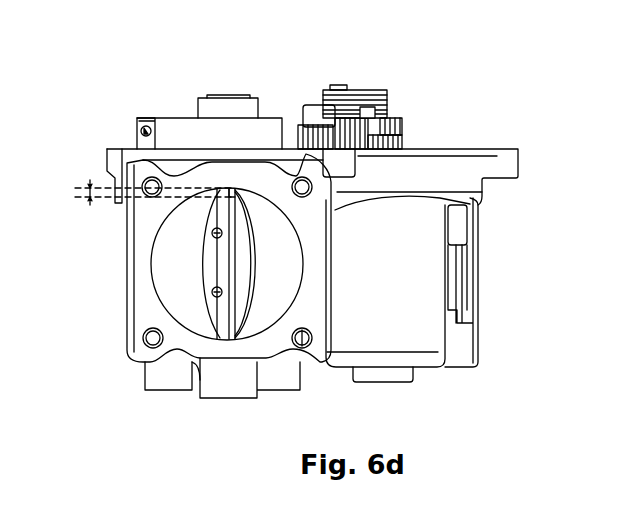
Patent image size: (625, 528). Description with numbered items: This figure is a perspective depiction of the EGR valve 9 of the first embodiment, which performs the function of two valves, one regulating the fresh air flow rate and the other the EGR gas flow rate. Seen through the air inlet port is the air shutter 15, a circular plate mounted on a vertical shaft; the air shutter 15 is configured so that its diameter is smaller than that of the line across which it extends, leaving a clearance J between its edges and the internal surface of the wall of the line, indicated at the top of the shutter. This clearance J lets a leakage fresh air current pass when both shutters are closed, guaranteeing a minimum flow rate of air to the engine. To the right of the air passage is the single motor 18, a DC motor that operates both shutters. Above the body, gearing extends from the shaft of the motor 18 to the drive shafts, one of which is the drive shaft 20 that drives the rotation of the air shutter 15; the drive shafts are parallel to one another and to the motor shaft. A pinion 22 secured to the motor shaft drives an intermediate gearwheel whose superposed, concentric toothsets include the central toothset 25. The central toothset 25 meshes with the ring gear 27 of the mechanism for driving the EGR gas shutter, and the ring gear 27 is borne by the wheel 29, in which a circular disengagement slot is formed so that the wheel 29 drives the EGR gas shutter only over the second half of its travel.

The EGR valve 9 is at (353, 93).
The air shutter 15 is at (207, 258).
The motor 18 is at (421, 286).
The drive shaft 20 is at (227, 108).
The pinion 22 is at (408, 145).
The central toothset 25 is at (404, 128).
The ring gear 27 is at (288, 142).
The wheel 29 is at (297, 120).
The clearance J is at (147, 192).